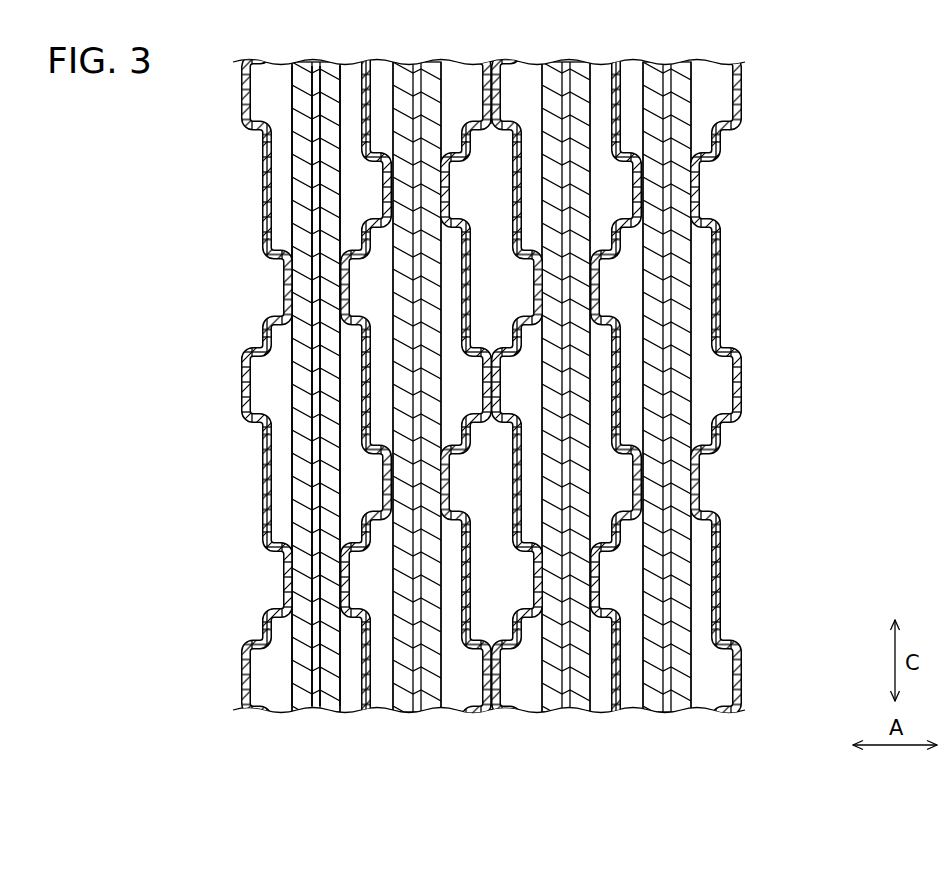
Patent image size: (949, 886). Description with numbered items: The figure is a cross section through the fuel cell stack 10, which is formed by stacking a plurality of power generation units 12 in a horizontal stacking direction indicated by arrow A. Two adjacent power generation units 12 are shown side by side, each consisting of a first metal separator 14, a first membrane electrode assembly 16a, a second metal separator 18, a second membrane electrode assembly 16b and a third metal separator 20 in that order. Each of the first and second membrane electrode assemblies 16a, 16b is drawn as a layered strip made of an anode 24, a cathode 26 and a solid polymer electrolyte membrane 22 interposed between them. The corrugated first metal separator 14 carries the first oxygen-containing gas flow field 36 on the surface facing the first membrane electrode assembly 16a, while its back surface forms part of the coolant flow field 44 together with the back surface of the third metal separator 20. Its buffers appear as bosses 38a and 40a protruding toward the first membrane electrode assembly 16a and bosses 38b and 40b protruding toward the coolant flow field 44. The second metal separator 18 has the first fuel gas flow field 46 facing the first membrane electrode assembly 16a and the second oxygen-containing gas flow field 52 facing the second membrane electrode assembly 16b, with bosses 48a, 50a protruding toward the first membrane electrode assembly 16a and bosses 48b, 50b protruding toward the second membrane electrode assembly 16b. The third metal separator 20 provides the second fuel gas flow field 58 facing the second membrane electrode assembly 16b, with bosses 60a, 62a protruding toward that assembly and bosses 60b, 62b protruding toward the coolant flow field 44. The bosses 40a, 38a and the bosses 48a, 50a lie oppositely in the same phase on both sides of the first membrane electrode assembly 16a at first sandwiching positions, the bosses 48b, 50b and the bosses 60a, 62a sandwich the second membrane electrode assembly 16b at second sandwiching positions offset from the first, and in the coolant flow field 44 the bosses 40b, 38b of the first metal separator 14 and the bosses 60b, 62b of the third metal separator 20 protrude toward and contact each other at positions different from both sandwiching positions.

The fuel cell stack 10 is at (98, 136).
The power generation unit 12 is at (436, 773).
The first metal separator 14 is at (260, 715).
The first membrane electrode assembly 16a is at (310, 713).
The second membrane electrode assembly 16b is at (412, 713).
The second metal separator 18 is at (370, 713).
The third metal separator 20 is at (457, 713).
The solid polymer electrolyte membrane 22 is at (317, 172).
The anode 24 is at (332, 192).
The cathode 26 is at (300, 143).
The first oxygen-containing gas flow field 36 is at (282, 521).
The bosses of inlet buffer 38a is at (283, 244).
The bosses of inlet buffer 38b is at (243, 360).
The bosses of outlet buffer 40a is at (492, 290).
The bosses of outlet buffer 40b is at (490, 323).
The coolant flow field 44 is at (483, 613).
The first fuel gas flow field 46 is at (350, 653).
The bosses of inlet buffer 48a is at (233, 298).
The bosses of inlet buffer 48b is at (251, 420).
The bosses of outlet buffer 50a is at (345, 289).
The bosses of outlet buffer 50b is at (388, 445).
The second oxygen-containing gas flow field 52 is at (383, 597).
The second fuel gas flow field 58 is at (450, 655).
The bosses of inlet buffer 60a is at (653, 105).
The bosses of inlet buffer 60b is at (670, 412).
The bosses of outlet buffer 62a is at (448, 145).
The bosses of outlet buffer 62b is at (483, 118).